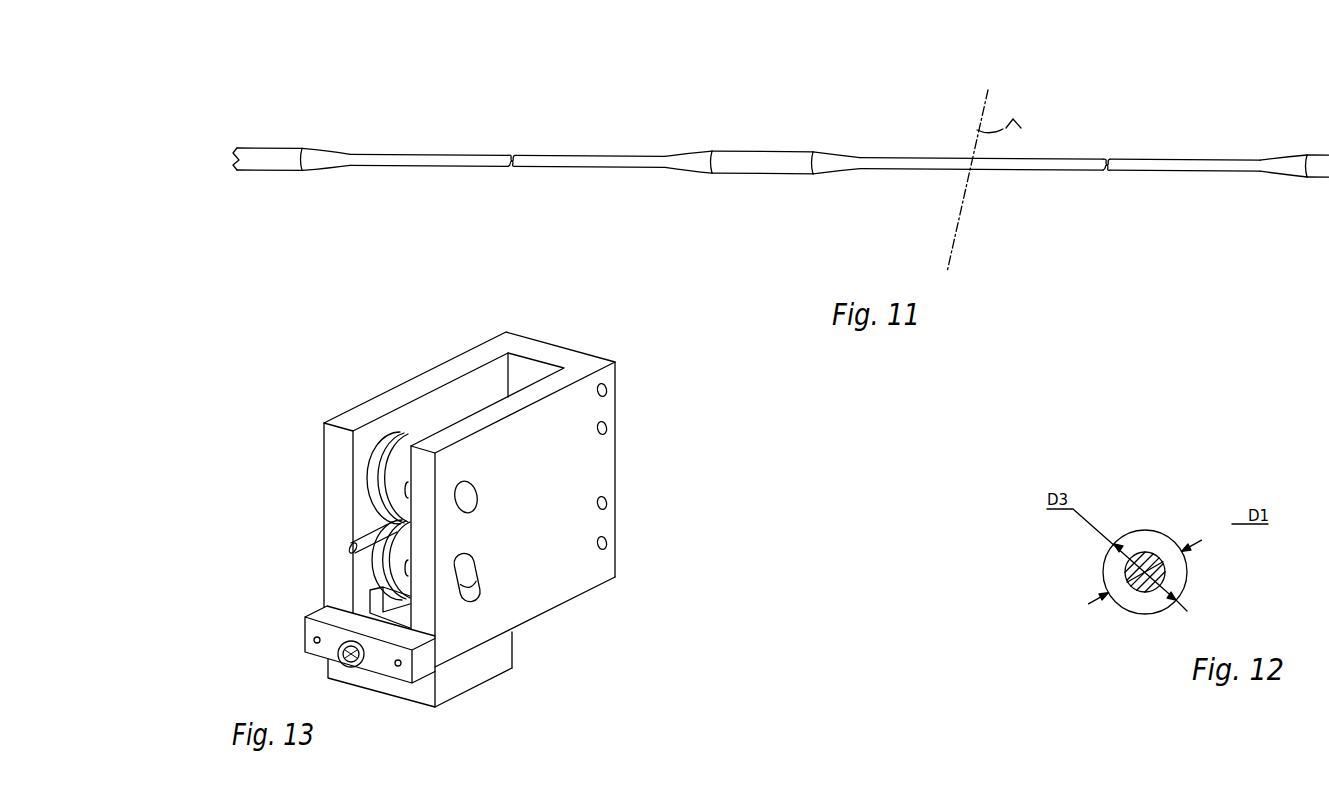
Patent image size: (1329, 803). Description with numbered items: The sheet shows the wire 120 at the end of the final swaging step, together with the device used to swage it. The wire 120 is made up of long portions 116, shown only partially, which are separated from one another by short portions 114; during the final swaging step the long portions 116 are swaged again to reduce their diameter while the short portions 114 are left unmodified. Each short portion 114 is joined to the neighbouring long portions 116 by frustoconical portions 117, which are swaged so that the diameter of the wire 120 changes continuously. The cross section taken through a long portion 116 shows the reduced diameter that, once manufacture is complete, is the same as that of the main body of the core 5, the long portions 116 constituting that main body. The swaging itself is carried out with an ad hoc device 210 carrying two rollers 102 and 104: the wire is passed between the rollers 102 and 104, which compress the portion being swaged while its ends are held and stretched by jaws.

In FIG. 11, the short portions 114 is at (258, 156).
In FIG. 12, the short portions 114 is at (1173, 575).
In FIG. 11, the long portions 116 is at (421, 159).
In FIG. 12, the long portions 116 is at (1144, 552).
In FIG. 11, the frustoconical portions 117 is at (320, 157).
In FIG. 11, the wire 120 is at (1112, 132).
In FIG. 13, the device 210 is at (387, 362).
In FIG. 13, the roller 102 is at (370, 470).
In FIG. 13, the roller 104 is at (373, 577).
In FIG. 13, the core 5 is at (368, 537).